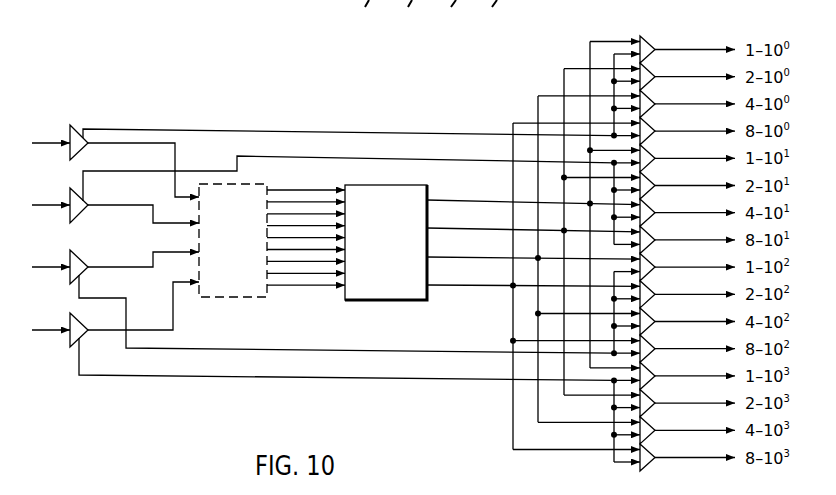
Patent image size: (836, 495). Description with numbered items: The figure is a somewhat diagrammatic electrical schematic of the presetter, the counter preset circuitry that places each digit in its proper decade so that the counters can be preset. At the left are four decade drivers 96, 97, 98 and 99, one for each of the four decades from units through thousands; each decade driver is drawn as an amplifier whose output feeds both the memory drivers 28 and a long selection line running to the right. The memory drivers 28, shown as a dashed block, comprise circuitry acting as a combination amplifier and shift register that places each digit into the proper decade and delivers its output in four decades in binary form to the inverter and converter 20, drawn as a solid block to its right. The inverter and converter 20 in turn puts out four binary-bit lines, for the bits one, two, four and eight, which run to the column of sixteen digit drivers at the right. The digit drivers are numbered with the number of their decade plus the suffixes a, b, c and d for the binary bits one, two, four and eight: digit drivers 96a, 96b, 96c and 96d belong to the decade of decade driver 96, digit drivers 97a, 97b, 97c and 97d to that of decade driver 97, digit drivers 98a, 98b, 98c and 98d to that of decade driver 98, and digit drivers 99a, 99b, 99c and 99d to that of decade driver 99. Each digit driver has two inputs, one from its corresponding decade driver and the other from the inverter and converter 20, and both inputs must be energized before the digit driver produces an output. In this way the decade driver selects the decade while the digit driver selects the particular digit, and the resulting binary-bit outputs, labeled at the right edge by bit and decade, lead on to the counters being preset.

The decade driver 96 is at (73, 125).
The decade driver 97 is at (70, 190).
The decade driver 98 is at (78, 260).
The decade driver 99 is at (70, 315).
The memory drivers 28 is at (272, 185).
The inverter and converter 20 is at (414, 186).
The digit driver 96a is at (650, 46).
The digit driver 96b is at (651, 73).
The digit driver 96c is at (651, 100).
The digit driver 96d is at (651, 127).
The digit driver 97a is at (651, 154).
The digit driver 97b is at (651, 182).
The digit driver 97c is at (651, 209).
The digit driver 97d is at (651, 236).
The digit driver 98a is at (651, 263).
The digit driver 98b is at (651, 290).
The digit driver 98c is at (651, 318).
The digit driver 98d is at (651, 345).
The digit driver 99a is at (651, 372).
The digit driver 99b is at (651, 399).
The digit driver 99c is at (651, 426).
The digit driver 99d is at (651, 454).